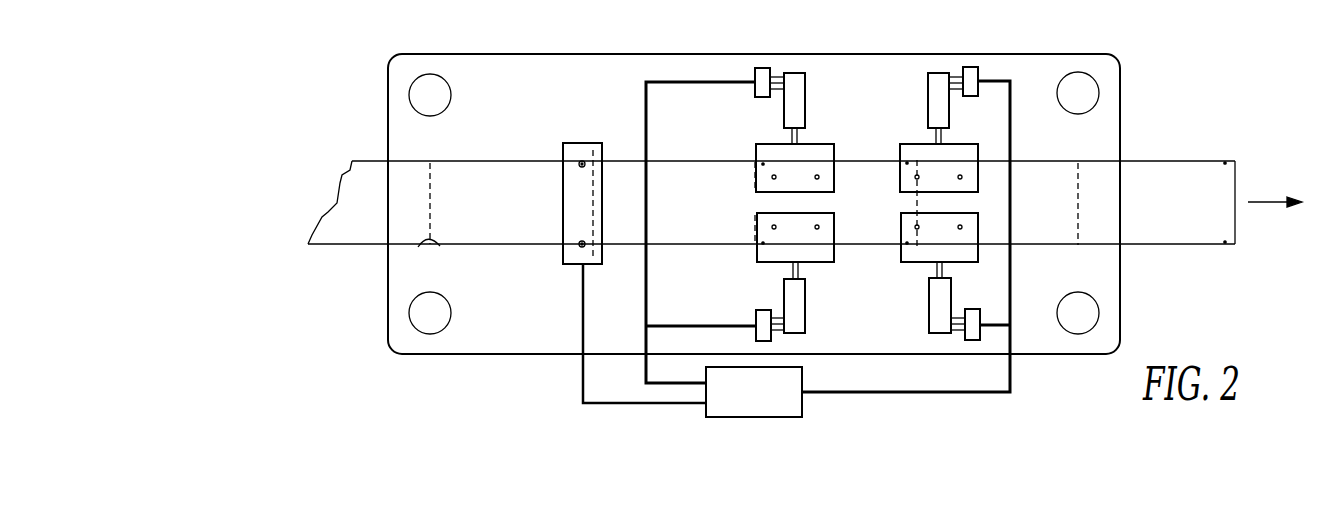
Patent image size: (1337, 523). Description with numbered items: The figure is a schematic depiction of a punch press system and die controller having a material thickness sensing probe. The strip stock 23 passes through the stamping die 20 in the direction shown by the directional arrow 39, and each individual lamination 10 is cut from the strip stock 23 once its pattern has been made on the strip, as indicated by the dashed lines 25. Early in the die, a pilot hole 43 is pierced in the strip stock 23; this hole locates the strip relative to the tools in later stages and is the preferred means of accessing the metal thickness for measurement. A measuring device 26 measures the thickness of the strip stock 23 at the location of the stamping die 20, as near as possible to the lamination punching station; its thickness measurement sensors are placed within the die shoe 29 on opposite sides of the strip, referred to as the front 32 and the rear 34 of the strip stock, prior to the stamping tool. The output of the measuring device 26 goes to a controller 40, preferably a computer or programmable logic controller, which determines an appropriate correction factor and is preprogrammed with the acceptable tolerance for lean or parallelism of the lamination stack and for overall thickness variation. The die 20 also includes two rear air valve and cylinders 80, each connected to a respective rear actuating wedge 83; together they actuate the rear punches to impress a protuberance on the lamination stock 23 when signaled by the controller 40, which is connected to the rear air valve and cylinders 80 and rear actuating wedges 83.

The lamination 10 is at (513, 210).
The stamping die 20 is at (1120, 45).
The strip stock 23 is at (360, 175).
The dashed lines 25 is at (428, 183).
The measuring device 26 is at (563, 145).
The die shoe 29 is at (516, 327).
The front of the strip stock 32 is at (884, 285).
The rear of the strip stock 34 is at (899, 206).
The directional arrow 39 is at (1265, 200).
The controller 40 is at (803, 408).
The pilot hole 43 is at (440, 163).
The rear air valve and cylinders 80 is at (928, 78).
The rear actuating wedges 83 is at (978, 152).